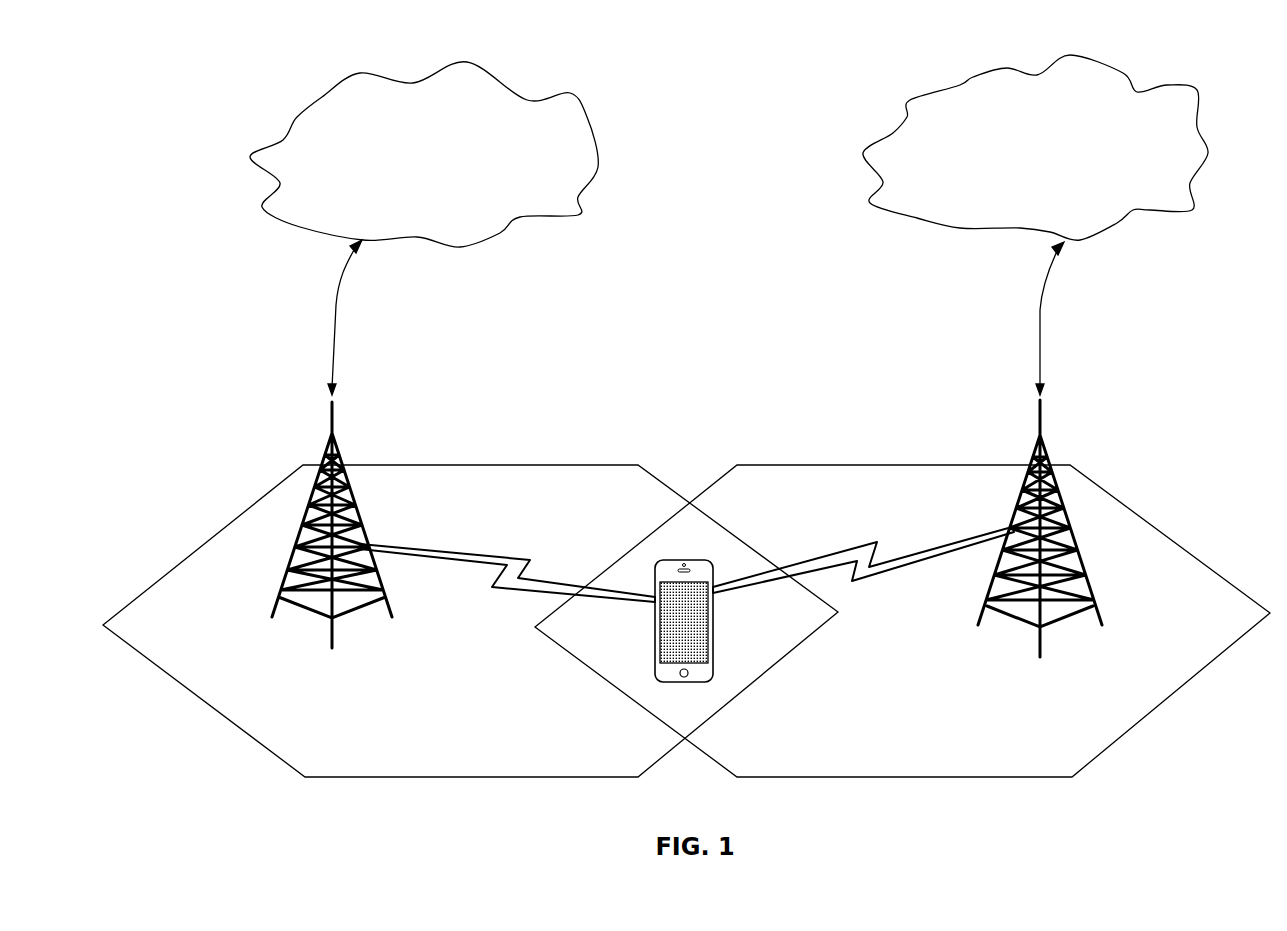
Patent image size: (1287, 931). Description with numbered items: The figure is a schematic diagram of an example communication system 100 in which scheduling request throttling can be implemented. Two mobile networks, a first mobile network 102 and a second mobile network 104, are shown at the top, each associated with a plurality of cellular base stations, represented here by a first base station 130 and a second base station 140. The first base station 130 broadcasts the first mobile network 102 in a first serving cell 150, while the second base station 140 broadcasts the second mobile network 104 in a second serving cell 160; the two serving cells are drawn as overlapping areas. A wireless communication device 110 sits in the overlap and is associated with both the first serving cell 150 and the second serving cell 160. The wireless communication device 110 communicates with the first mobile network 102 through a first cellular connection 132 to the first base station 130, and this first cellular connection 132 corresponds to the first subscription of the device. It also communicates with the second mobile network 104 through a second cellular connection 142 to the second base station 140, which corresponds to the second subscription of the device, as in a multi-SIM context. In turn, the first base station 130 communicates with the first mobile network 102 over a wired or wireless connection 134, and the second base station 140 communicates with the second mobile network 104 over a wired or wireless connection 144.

The communication system 100 is at (738, 141).
The first mobile network 102 is at (322, 97).
The second mobile network 104 is at (1007, 68).
The wireless communication device 110 is at (713, 603).
The first base station 130 is at (292, 577).
The first cellular connection 132 is at (523, 590).
The wired or wireless connection 134 is at (336, 303).
The second base station 140 is at (1080, 575).
The second cellular connection 142 is at (863, 543).
The wired or wireless connection 144 is at (1040, 308).
The first serving cell 150 is at (522, 465).
The second serving cell 160 is at (875, 465).